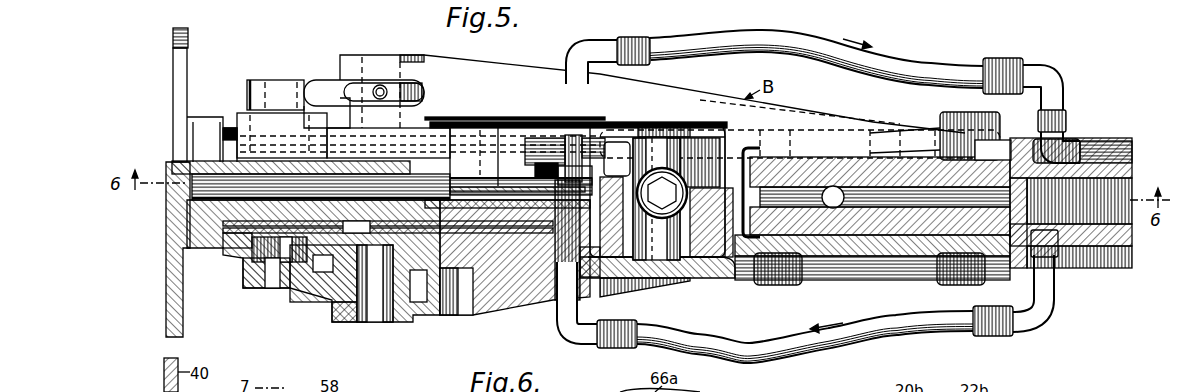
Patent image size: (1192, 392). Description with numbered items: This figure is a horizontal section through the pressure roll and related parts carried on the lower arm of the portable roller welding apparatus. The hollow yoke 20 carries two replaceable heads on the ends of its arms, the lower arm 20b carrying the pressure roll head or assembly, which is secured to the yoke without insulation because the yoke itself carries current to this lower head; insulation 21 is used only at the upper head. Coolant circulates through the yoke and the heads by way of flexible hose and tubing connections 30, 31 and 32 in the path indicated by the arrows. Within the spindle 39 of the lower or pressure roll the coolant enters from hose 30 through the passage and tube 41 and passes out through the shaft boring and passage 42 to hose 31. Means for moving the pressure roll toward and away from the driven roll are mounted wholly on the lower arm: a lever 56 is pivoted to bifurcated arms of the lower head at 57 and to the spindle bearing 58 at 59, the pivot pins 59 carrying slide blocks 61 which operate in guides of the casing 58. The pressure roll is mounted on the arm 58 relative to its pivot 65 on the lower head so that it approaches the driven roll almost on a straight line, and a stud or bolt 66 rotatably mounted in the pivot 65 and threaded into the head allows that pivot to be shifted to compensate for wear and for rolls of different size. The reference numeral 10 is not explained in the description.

The mounting flange 10 is at (173, 72).
The shaft boring and passage 42 is at (198, 180).
The passage and tube 41 is at (223, 194).
The slide blocks 61 is at (238, 248).
The pivot pins 59 is at (272, 282).
The lever 56 is at (320, 298).
The pivot 57 is at (372, 316).
The spindle 39 is at (473, 275).
The spindle bearing 58 is at (437, 143).
The pivot 65 is at (668, 136).
The stud or bolt 66 is at (658, 218).
The hose connection 31 is at (812, 38).
The hose connection 30 is at (775, 356).
The lower arm 20b is at (877, 166).
The insulation 21 is at (962, 124).
The hose connection 32 is at (1105, 143).
The yoke 20 is at (1123, 210).